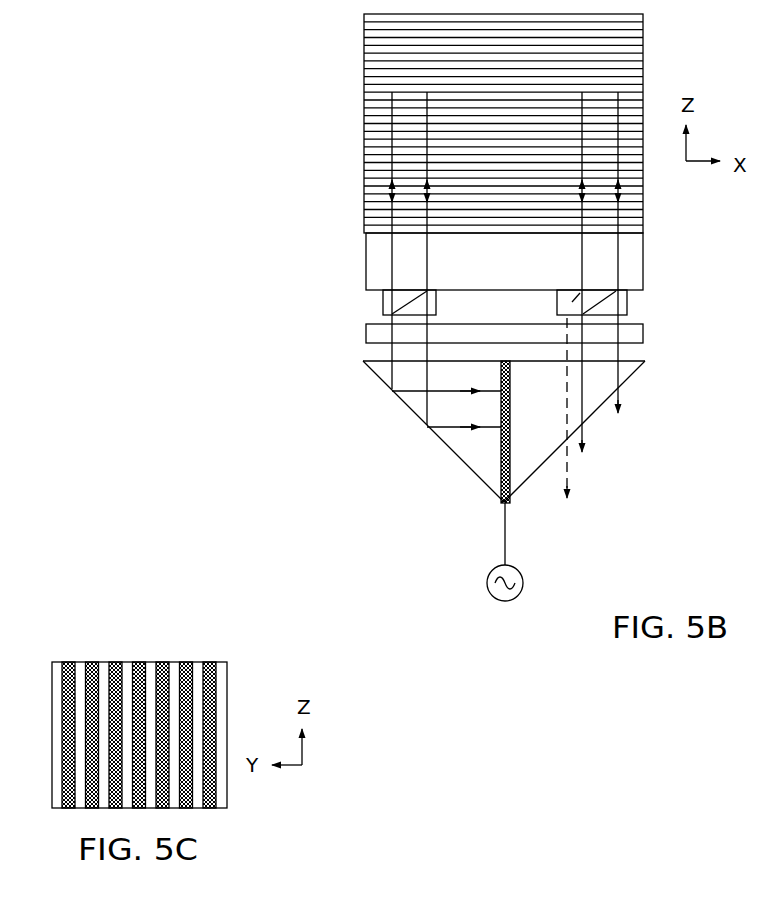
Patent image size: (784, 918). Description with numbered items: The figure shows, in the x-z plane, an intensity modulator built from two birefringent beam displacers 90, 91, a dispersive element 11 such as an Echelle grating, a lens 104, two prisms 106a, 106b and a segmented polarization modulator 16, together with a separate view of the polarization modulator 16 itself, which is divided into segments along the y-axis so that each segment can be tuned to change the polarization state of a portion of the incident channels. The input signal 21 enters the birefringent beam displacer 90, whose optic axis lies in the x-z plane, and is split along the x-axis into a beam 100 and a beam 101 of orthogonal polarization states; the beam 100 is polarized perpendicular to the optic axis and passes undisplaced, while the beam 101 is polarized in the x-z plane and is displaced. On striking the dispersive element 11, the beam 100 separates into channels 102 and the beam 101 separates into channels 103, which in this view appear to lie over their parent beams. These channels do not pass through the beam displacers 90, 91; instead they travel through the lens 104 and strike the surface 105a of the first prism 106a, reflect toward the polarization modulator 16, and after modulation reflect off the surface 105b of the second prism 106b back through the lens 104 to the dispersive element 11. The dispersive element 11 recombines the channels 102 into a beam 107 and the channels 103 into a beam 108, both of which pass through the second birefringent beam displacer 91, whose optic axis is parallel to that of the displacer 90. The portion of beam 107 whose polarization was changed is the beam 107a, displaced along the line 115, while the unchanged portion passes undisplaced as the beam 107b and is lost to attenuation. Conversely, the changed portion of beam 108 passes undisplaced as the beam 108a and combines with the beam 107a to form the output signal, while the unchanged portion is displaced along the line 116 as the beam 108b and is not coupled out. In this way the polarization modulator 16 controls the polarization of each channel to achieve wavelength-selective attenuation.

The dispersive element 11 is at (630, 62).
The polarization modulator 16 is at (510, 508).
The input signal 21 is at (392, 412).
The birefringent beam displacer 90 is at (383, 300).
The birefringent beam displacer 91 is at (627, 300).
The beam 100 is at (322, 240).
The beam 101 is at (339, 258).
The channels 102 is at (387, 278).
The channels 103 is at (398, 258).
The lens 104 is at (372, 333).
The surface 105a is at (453, 457).
The surface 105b is at (633, 372).
The first prism 106a is at (381, 368).
The second prism 106b is at (595, 402).
The beam 107 is at (618, 275).
The beam 107a is at (613, 408).
The beam 107b is at (623, 420).
The beam 108 is at (583, 252).
The beam 108a is at (613, 408).
The beam 108b is at (567, 518).
The line 115 is at (600, 304).
The line 116 is at (567, 310).